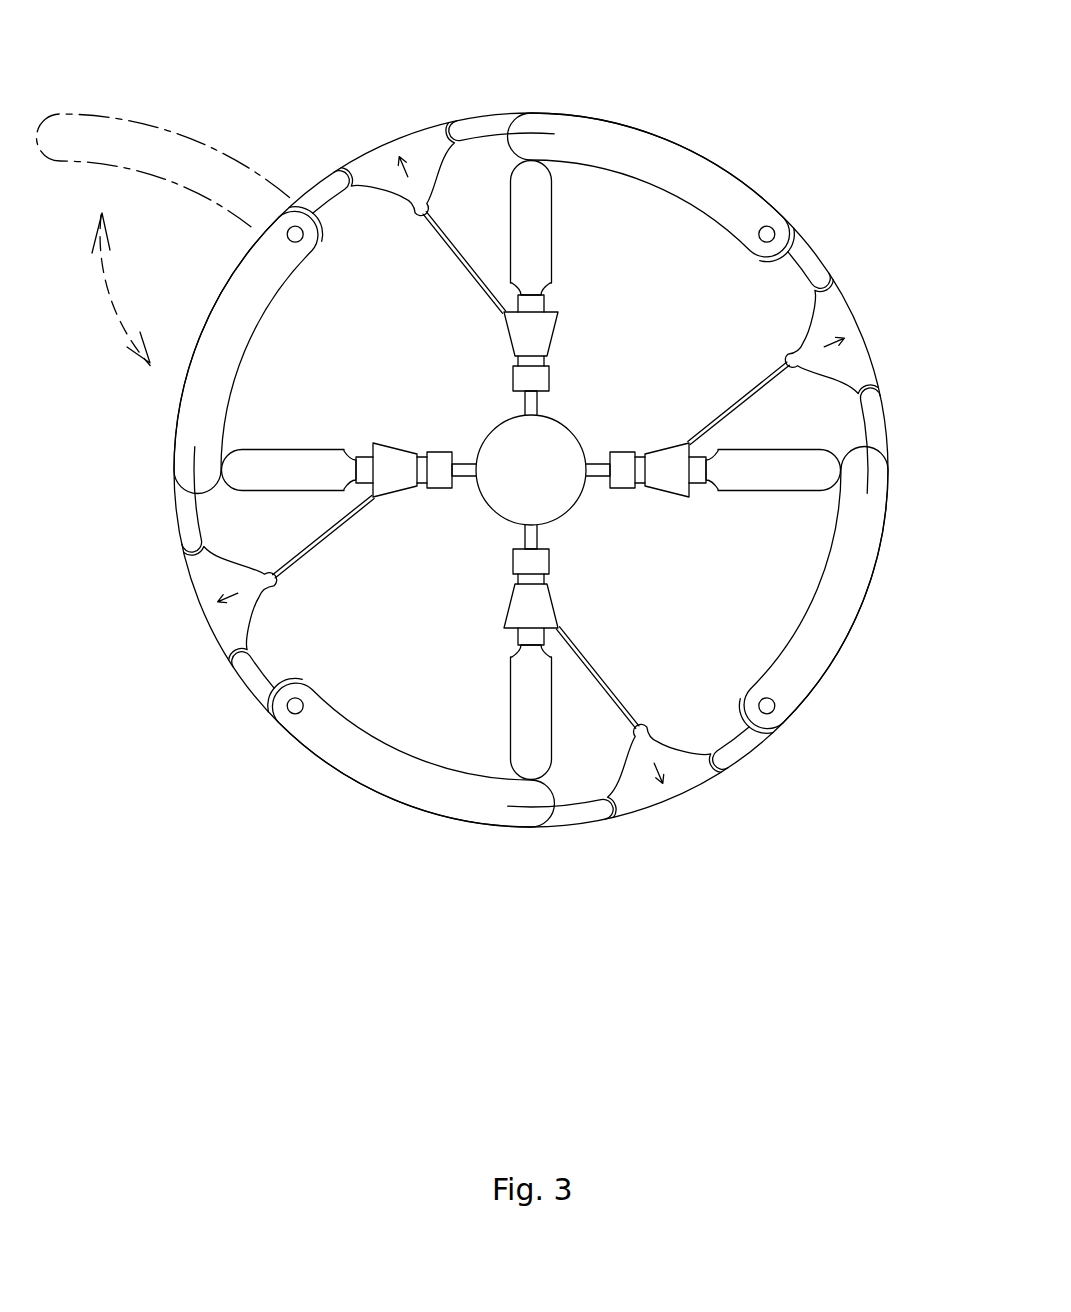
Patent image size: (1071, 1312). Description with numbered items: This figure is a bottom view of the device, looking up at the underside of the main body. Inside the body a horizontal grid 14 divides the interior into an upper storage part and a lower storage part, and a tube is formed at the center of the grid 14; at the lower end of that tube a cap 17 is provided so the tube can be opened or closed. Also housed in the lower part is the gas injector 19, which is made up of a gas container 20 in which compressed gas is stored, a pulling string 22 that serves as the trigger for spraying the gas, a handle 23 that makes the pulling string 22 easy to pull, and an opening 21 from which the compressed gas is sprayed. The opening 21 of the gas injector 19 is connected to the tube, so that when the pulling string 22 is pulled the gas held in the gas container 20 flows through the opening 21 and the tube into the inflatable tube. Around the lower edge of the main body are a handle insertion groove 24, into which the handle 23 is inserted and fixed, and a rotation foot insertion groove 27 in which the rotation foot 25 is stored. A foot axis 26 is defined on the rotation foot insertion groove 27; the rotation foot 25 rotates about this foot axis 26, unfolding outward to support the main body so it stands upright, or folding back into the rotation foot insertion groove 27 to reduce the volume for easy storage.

The grid 14 is at (655, 273).
The cap 17 is at (558, 490).
The gas injector 19 is at (518, 608).
The gas container 20 is at (525, 748).
The opening 21 is at (528, 530).
The pulling string 22 is at (600, 680).
The handle 23 is at (640, 797).
The handle insertion groove 24 is at (713, 773).
The rotation foot 25 is at (825, 636).
The foot axis 26 is at (777, 707).
The rotation foot insertion groove 27 is at (762, 737).